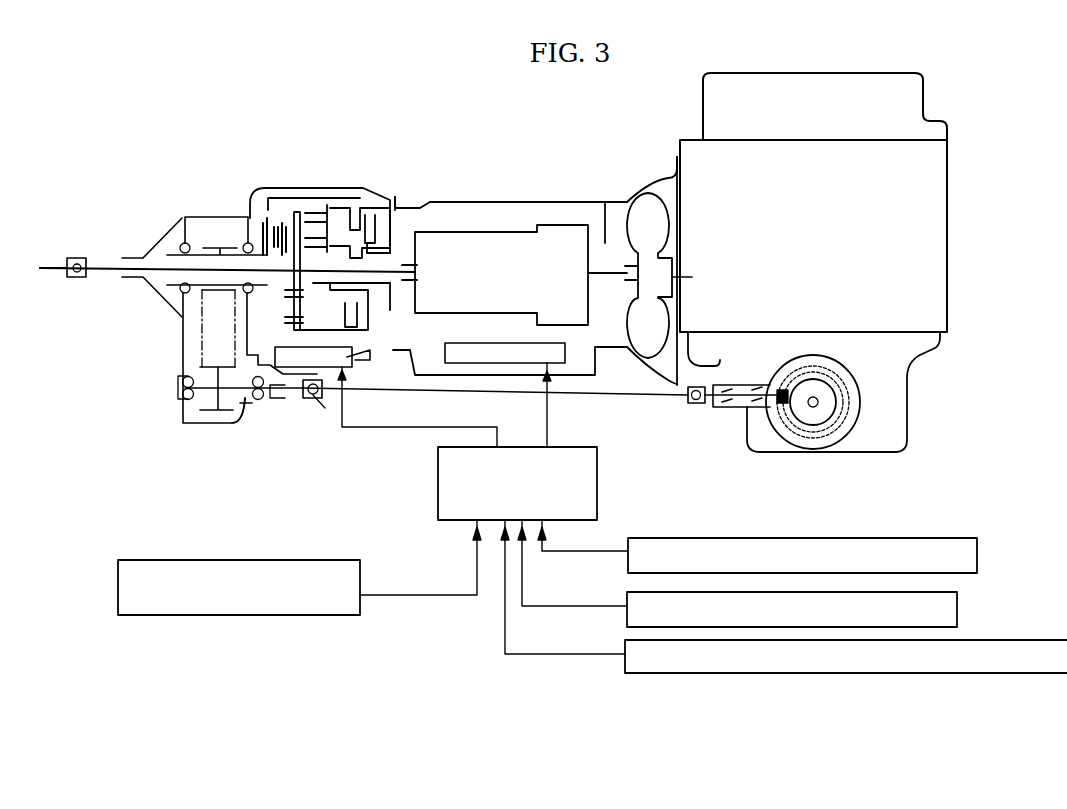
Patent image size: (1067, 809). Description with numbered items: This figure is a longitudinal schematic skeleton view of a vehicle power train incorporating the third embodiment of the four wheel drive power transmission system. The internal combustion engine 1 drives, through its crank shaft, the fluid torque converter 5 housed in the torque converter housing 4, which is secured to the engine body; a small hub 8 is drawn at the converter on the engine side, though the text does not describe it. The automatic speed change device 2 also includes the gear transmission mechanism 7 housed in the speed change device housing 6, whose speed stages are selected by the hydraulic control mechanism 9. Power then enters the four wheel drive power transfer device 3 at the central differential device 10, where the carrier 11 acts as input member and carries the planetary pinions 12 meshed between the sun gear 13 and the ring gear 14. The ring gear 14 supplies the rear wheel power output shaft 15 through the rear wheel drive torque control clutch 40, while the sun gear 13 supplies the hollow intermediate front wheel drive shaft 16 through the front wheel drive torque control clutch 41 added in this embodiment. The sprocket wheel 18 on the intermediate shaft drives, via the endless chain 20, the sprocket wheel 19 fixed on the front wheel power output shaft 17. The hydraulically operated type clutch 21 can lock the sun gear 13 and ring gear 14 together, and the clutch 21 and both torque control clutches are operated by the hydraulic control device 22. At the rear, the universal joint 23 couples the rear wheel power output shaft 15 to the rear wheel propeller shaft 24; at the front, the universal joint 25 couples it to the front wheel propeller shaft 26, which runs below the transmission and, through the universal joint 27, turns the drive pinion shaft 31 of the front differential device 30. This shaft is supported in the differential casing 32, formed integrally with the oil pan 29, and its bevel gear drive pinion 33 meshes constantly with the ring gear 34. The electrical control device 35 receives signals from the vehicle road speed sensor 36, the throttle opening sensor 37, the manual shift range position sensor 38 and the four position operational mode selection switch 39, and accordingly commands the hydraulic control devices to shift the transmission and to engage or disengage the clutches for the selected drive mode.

The internal combustion engine 1 is at (802, 185).
The automatic speed change device 2 is at (509, 197).
The four wheel drive power transfer device 3 is at (306, 187).
The torque converter housing 4 is at (667, 181).
The fluid torque converter 5 is at (655, 228).
The speed change device housing 6 is at (578, 200).
The gear transmission mechanism 7 is at (463, 297).
The converter hub 8 is at (692, 277).
The hydraulic control mechanism 9 is at (473, 355).
The central differential device 10 is at (333, 206).
The carrier 11 is at (264, 226).
The planetary pinions 12 is at (294, 232).
The sun gear 13 is at (318, 252).
The ring gear 14 is at (317, 213).
The rear wheel power output shaft 15 is at (102, 265).
The intermediate front wheel drive shaft 16 is at (177, 308).
The front wheel power output shaft 17 is at (247, 410).
The sprocket wheel 18 is at (217, 247).
The sprocket wheel 19 is at (210, 413).
The endless chain 20 is at (200, 350).
The hydraulically operated type clutch 21 is at (362, 213).
The hydraulic control device 22 is at (350, 358).
The universal joint 23 is at (73, 278).
The rear wheel propeller shaft 24 is at (50, 265).
The universal joint 25 is at (306, 399).
The front wheel propeller shaft 26 is at (528, 394).
The universal joint 27 is at (694, 404).
The oil pan 29 is at (913, 420).
The front differential device 30 is at (862, 390).
The drive pinion shaft 31 is at (744, 398).
The differential casing 32 is at (744, 383).
The bevel gear drive pinion 33 is at (803, 386).
The ring gear 34 is at (838, 372).
The electrical control device 35 is at (598, 483).
The vehicle road speed sensor 36 is at (978, 554).
The throttle opening sensor 37 is at (960, 609).
The manual shift range position sensor 38 is at (977, 675).
The operational mode selection switch 39 is at (273, 618).
The rear wheel drive torque control clutch 40 is at (263, 218).
The front wheel drive torque control clutch 41 is at (262, 306).